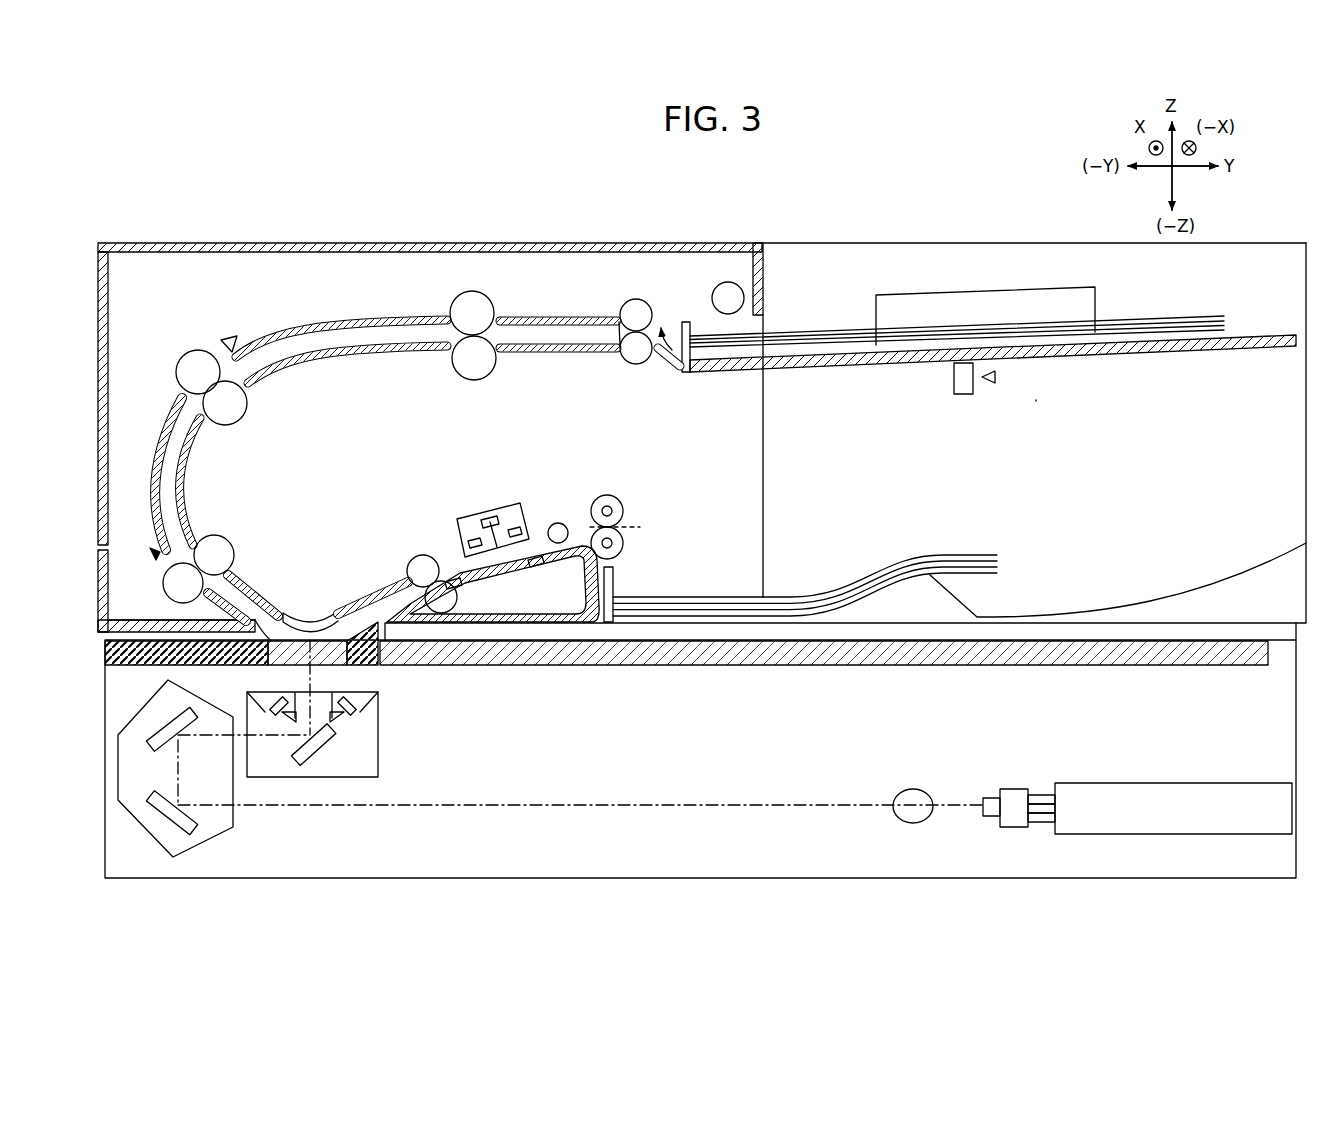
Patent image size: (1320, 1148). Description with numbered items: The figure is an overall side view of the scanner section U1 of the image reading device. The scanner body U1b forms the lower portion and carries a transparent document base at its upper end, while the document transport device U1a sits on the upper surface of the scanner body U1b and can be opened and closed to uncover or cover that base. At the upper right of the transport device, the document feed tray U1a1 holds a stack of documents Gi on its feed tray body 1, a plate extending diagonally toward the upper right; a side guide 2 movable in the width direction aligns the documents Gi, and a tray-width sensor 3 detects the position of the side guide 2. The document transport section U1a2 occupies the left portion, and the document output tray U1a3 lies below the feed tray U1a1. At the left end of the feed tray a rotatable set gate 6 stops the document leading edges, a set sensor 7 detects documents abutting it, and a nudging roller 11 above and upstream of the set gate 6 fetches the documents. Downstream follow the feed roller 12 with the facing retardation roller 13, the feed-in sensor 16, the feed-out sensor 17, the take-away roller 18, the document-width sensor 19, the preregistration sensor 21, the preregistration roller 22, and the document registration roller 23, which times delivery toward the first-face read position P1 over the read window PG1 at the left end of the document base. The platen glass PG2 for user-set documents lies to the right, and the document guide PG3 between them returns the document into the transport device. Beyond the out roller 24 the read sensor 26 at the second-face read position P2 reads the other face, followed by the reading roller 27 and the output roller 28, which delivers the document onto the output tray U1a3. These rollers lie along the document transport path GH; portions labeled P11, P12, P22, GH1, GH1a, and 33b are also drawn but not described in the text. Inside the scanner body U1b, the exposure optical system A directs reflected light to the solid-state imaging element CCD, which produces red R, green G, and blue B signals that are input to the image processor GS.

The scanner section U1 is at (303, 170).
The document transport device U1a is at (400, 200).
The document feed tray U1a1 is at (1037, 402).
The document transport section U1a2 is at (516, 240).
The document output tray U1a3 is at (1078, 545).
The scanner body U1b is at (432, 885).
The feed tray body 1 is at (898, 372).
The side guide 2 is at (900, 308).
The tray-width sensor 3 is at (990, 392).
The set gate 6 is at (686, 374).
The set sensor 7 is at (669, 299).
The nudging roller 11 is at (724, 294).
The feed roller 12 is at (636, 304).
The retardation roller 13 is at (634, 360).
The feed-in sensor 16 is at (600, 299).
The feed-out sensor 17 is at (506, 299).
The take-away roller 18 is at (466, 306).
The document-width sensor 19 is at (343, 299).
The preregistration sensor 21 is at (230, 338).
The preregistration roller 22 is at (192, 366).
The document registration roller 23 is at (228, 550).
The out roller 24 is at (422, 564).
The read sensor 26 is at (494, 514).
The reading roller 27 is at (556, 522).
The output roller 28 is at (618, 543).
The feed path P11 is at (756, 328).
The reversal path P12 is at (155, 560).
The first-face read position P1 is at (312, 628).
The second-face read position P2 is at (503, 553).
The discharge path P22 is at (578, 524).
The read window PG1 is at (352, 666).
The platen glass PG2 is at (565, 666).
The document guide PG3 is at (372, 636).
The document transport path GH is at (307, 548).
The inner curved guide GH1 is at (178, 478).
The outer curved guide GH1a is at (174, 420).
The document Gi is at (1172, 318).
The tray plate 33b is at (1257, 338).
The exposure optical system A is at (137, 708).
The blue electric signal B is at (1040, 826).
The solid-state imaging element CCD is at (1013, 796).
The red electric signal R is at (1033, 795).
The green electric signal G is at (1043, 804).
The image processor GS is at (1152, 800).